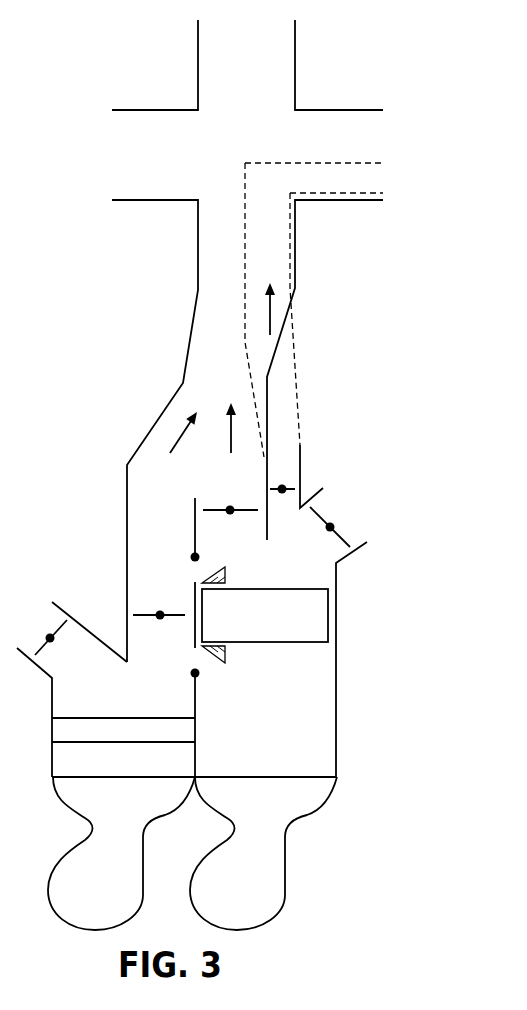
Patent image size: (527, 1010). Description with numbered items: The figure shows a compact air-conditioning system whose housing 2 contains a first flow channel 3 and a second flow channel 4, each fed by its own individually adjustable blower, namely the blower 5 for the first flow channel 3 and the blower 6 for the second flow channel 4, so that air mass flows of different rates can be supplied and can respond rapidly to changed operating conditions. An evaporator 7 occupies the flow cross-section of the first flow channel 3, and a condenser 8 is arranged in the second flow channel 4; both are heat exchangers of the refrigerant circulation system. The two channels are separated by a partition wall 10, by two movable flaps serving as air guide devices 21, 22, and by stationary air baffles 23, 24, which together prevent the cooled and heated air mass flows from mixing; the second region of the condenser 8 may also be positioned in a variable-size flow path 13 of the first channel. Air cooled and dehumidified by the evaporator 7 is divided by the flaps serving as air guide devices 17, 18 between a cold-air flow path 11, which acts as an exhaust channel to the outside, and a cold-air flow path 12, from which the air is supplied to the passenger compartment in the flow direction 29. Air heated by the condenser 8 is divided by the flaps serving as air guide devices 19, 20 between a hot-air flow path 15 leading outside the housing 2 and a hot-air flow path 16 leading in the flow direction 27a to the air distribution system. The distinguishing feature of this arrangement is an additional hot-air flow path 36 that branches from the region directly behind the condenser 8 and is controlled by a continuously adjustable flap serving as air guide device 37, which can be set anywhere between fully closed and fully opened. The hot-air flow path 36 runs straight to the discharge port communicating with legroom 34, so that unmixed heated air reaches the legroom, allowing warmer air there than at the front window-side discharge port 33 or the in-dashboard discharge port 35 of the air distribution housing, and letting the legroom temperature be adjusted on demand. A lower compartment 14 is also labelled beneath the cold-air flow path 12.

The front window-side discharge port 33 is at (141, 152).
The discharge port communicating with legroom 34 is at (339, 155).
The in-dashboard discharge port 35 is at (260, 79).
The hot-air flow path 36 is at (272, 220).
The flow direction 27a is at (270, 310).
The flow direction 29 is at (180, 436).
The housing 2 is at (125, 478).
The first flow channel 3 is at (108, 529).
The hot-air flow path 16 is at (220, 482).
The cold-air flow path 12 is at (150, 517).
The lower compartment 14 is at (151, 594).
The hot-air flow path 15 is at (335, 514).
The air guide device 20 is at (226, 508).
The air guide device 37 is at (285, 487).
The air guide device 19 is at (335, 527).
The flow path 13 is at (197, 571).
The air guide device 22 is at (205, 570).
The air baffle 24 is at (225, 573).
The condenser 8 is at (315, 612).
The air baffle 23 is at (226, 652).
The air guide device 21 is at (198, 676).
The partition wall 10 is at (197, 709).
The air guide device 18 is at (152, 615).
The cold-air flow path 11 is at (20, 638).
The air guide device 17 is at (50, 640).
The evaporator 7 is at (65, 729).
The blower 5 is at (62, 880).
The blower 6 is at (205, 880).
The second flow channel 4 is at (357, 700).